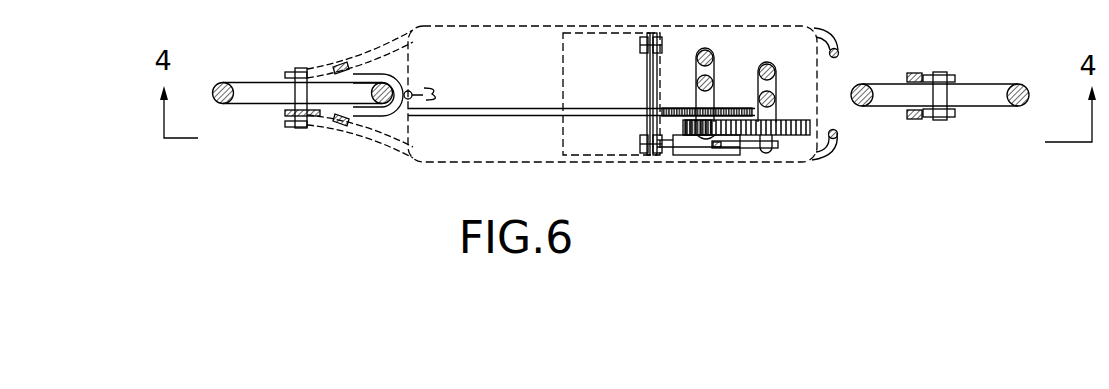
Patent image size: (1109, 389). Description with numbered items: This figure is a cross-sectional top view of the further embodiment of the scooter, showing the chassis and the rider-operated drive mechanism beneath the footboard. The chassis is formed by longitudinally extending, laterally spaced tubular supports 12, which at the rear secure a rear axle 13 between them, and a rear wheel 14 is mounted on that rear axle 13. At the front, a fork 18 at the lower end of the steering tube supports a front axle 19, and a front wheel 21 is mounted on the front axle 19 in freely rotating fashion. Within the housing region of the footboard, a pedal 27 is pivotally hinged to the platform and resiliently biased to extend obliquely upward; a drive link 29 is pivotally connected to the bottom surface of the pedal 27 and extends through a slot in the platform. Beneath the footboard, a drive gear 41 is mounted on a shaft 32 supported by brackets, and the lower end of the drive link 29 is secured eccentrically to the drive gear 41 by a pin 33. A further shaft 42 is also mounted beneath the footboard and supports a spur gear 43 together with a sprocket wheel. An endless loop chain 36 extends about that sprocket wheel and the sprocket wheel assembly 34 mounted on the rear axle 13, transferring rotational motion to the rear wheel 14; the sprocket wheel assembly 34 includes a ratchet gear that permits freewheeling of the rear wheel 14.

The tubular supports 12 is at (343, 68).
The rear axle 13 is at (288, 97).
The rear wheel 14 is at (222, 87).
The fork 18 is at (912, 73).
The front axle 19 is at (947, 95).
The front wheel 21 is at (988, 82).
The pedal 27 is at (563, 67).
The drive link 29 is at (728, 148).
The shaft 32 is at (767, 63).
The pin 33 is at (765, 153).
The sprocket wheel assembly 34 is at (286, 116).
The endless loop chain 36 is at (468, 108).
The drive gear 41 is at (800, 137).
The further shaft 42 is at (705, 55).
The spur gear 43 is at (697, 137).